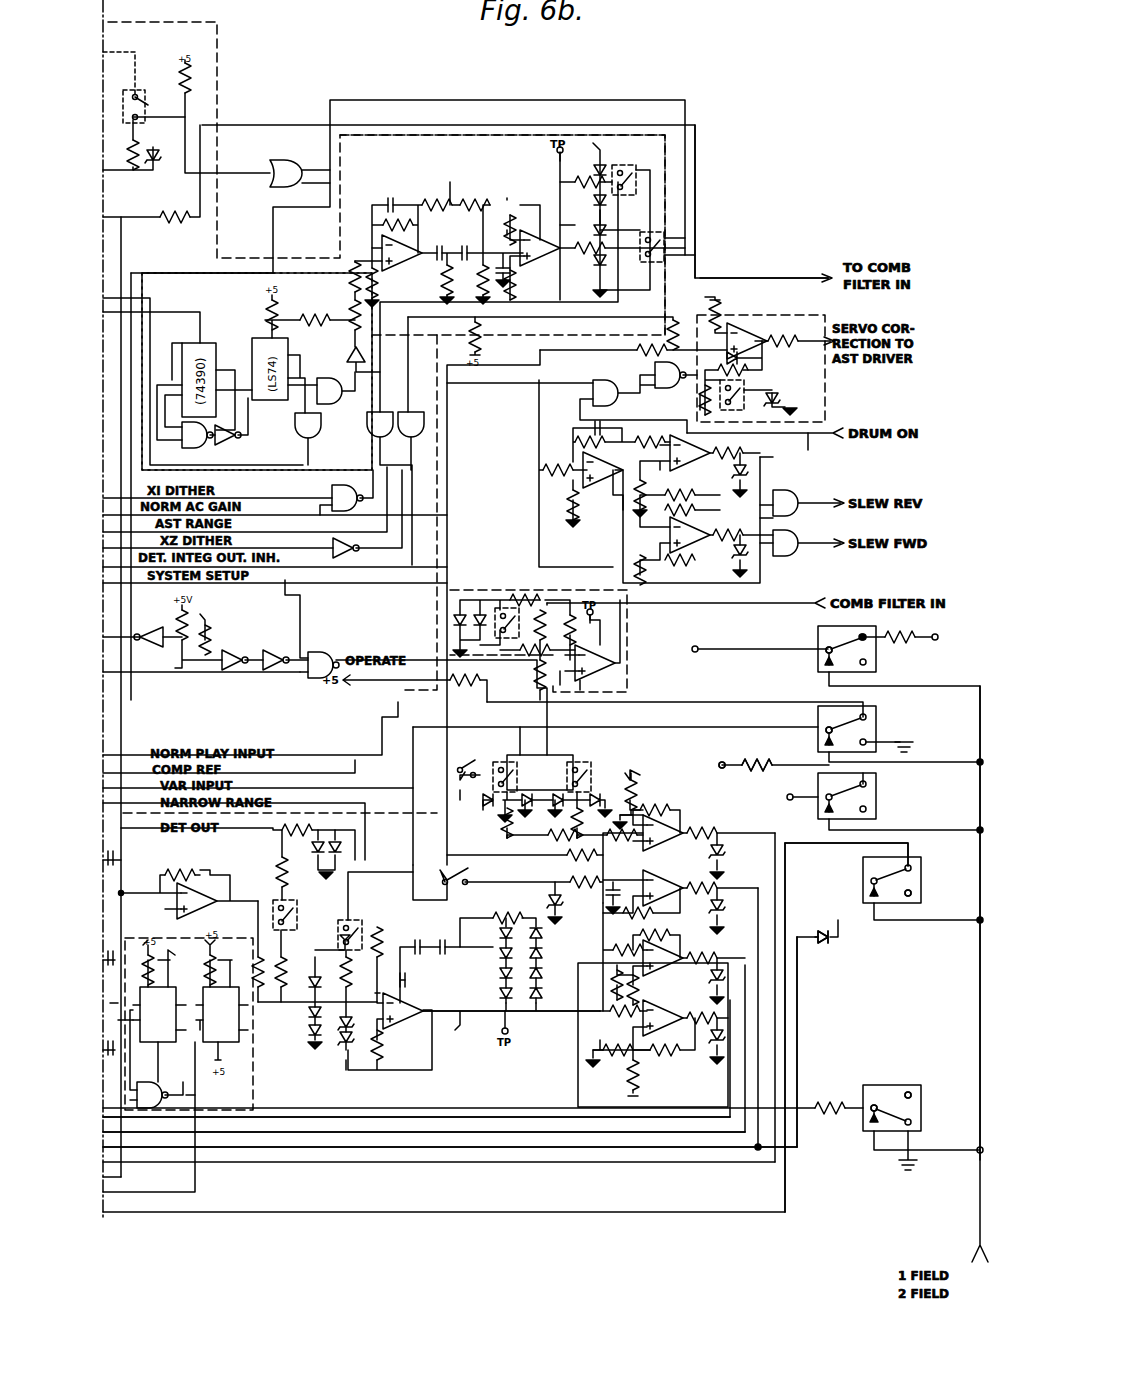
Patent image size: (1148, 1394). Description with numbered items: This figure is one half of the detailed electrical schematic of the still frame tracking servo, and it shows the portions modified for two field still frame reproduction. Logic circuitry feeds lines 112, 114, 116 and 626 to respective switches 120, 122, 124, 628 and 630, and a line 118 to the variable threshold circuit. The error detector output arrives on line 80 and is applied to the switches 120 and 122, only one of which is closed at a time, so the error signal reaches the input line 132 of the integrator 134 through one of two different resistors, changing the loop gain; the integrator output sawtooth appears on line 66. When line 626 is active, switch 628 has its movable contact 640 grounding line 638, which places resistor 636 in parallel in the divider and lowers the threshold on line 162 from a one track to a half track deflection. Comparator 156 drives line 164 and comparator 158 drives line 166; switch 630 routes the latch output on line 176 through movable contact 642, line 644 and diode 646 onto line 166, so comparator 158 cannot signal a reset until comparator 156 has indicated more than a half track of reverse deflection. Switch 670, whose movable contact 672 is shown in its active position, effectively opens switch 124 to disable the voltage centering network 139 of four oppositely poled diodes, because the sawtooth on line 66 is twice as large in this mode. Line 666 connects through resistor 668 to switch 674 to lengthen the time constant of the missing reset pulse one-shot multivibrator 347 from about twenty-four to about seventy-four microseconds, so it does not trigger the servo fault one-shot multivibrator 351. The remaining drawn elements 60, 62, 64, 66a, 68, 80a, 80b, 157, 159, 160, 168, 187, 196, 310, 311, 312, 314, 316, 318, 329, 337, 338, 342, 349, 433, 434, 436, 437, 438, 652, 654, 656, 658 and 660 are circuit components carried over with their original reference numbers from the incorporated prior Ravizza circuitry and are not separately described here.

The detector integrator circuit 60 is at (665, 155).
The output line to comb filter 62 is at (695, 248).
The servo correction line 64 is at (668, 340).
The line 66 is at (462, 1020).
The amplifier input line 66a is at (540, 443).
The servo correction output 68 is at (812, 333).
The line 80 is at (121, 235).
The comb filter input line 80a is at (776, 278).
The comb filter return line 80b is at (765, 603).
The line 112 is at (130, 770).
The line 114 is at (318, 755).
The line 116 is at (382, 715).
The line 118 is at (333, 775).
The switch 120 is at (297, 912).
The switch 122 is at (335, 940).
The switch 124 is at (460, 900).
The line 132 is at (283, 1002).
The integrator 134 is at (404, 998).
The voltage centering network 139 is at (490, 976).
The comparator 156 is at (670, 975).
The comparator 157 is at (697, 841).
The comparator 158 is at (680, 870).
The line 159 is at (810, 1006).
The amplifier 160 is at (665, 1005).
The line 162 is at (578, 1063).
The line 164 is at (365, 1132).
The line 166 is at (785, 900).
The line 168 is at (530, 1117).
The line 176 is at (846, 880).
The bias resistor network 187 is at (630, 1040).
The input line 196 is at (473, 855).
The dither logic circuit 310 is at (217, 73).
The control logic circuit 311 is at (437, 507).
The switch 312 is at (140, 103).
The counter circuit 314 is at (437, 430).
The switch 316 is at (770, 388).
The switch 318 is at (470, 870).
The servo correction amplifier circuit 329 is at (758, 315).
The switch circuit 337 is at (598, 754).
The sample and hold circuit 338 is at (505, 590).
The flip-flop circuit 342 is at (253, 1082).
The one-shot multivibrator 347 is at (159, 1011).
The NAND gate 349 is at (152, 1055).
The one-shot multivibrator 351 is at (222, 1000).
The switch 433 is at (647, 227).
The drum on line 434 is at (806, 451).
The slew comparator circuit 436 is at (633, 497).
The slew forward gate 437 is at (815, 543).
The slew reverse gate 438 is at (815, 503).
The line 626 is at (978, 998).
The switch 628 is at (898, 1085).
The switch 630 is at (912, 868).
The resistor 636 is at (828, 1102).
The line 638 is at (866, 1115).
The movable contact 640 is at (912, 1097).
The movable contact 642 is at (912, 888).
The line 644 is at (840, 930).
The diode 646 is at (820, 945).
The relay 652 is at (871, 653).
The input terminal 654 is at (696, 652).
The terminal 656 is at (900, 640).
The relay contact 658 is at (820, 670).
The relay contact 660 is at (825, 634).
The line 666 is at (722, 762).
The resistor 668 is at (760, 758).
The switch 670 is at (878, 718).
The movable contact 672 is at (826, 716).
The switch 674 is at (878, 797).